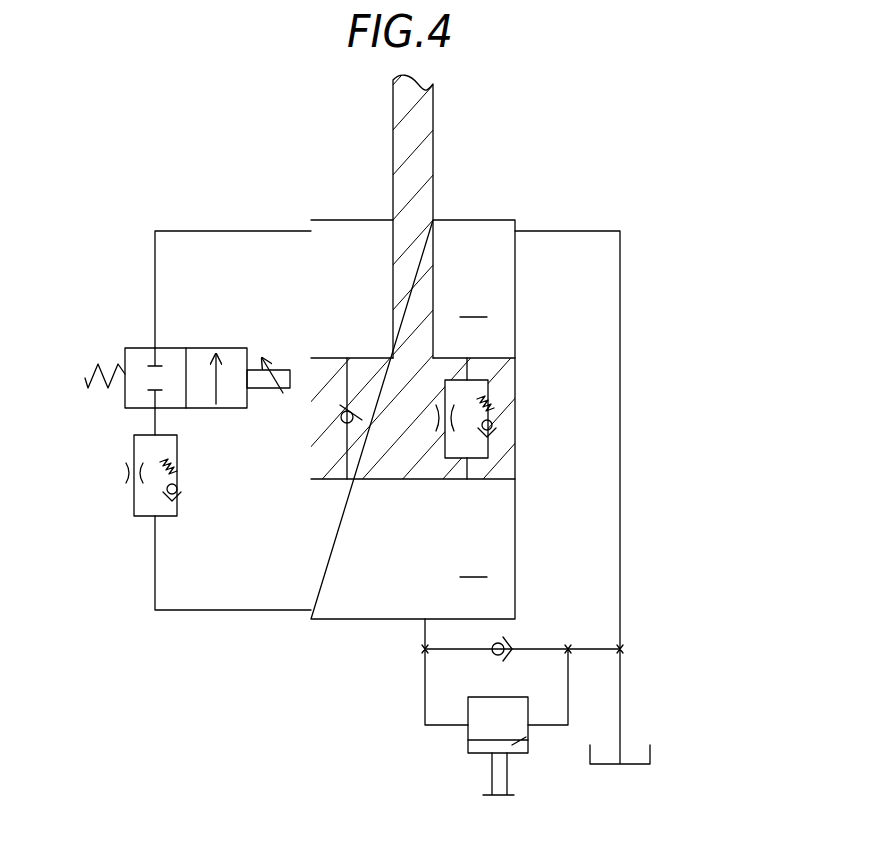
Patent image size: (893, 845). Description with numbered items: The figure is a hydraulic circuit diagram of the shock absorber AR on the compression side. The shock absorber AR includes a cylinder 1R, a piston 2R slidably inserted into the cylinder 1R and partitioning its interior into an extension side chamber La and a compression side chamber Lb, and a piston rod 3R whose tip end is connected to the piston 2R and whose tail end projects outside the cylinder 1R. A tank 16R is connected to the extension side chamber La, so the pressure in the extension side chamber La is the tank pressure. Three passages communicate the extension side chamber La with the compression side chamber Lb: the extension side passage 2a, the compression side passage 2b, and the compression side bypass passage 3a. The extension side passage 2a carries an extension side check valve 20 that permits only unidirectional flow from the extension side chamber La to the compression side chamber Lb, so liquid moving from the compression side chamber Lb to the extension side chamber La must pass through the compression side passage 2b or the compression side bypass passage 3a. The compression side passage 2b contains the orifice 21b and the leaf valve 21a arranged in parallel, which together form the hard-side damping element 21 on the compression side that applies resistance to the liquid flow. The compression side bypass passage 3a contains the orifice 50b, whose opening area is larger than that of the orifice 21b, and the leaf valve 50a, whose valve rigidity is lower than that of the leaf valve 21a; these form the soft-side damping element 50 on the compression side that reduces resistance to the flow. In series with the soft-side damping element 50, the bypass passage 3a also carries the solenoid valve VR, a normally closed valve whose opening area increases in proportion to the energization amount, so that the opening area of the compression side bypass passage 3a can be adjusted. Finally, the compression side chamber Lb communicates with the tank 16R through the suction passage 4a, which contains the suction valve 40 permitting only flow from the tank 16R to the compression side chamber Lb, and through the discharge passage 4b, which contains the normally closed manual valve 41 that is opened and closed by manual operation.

The shock absorber on the compression side AR is at (146, 161).
The cylinder 1R is at (521, 522).
The extension side chamber La is at (475, 304).
The compression side chamber Lb is at (475, 564).
The piston rod 3R is at (425, 163).
The piston 2R is at (375, 479).
The extension side passage 2a is at (345, 465).
The extension side check valve 20 is at (340, 424).
The hard-side damping element on the compression side 21 is at (505, 453).
The leaf valve 21a is at (494, 421).
The compression side passage 2b is at (516, 366).
The orifice 21b is at (437, 443).
The compression side bypass passage 3a is at (152, 297).
The solenoid valve VR is at (125, 412).
The soft-side damping element on the compression side 50 is at (126, 505).
The leaf valve 50a is at (180, 494).
The orifice 50b is at (125, 475).
The suction passage 4a is at (550, 643).
The suction valve 40 is at (494, 655).
The discharge passage 4b is at (443, 727).
The manual valve 41 is at (525, 757).
The tank 16R is at (652, 752).